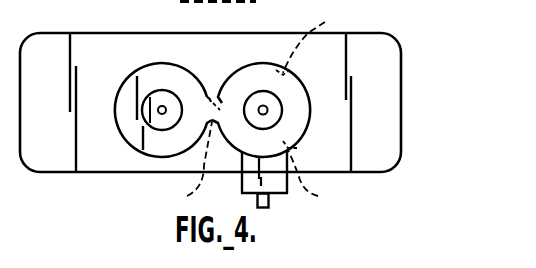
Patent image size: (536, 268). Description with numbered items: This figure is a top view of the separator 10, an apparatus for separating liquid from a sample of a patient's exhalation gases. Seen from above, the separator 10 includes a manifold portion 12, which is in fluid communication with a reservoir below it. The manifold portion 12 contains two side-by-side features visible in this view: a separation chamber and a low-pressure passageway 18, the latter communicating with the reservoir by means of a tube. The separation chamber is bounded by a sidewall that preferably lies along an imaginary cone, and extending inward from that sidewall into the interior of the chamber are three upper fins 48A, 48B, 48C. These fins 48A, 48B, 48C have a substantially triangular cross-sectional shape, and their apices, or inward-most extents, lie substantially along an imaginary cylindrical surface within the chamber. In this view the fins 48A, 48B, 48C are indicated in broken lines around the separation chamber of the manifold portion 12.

The separator 10 is at (403, 34).
The manifold portion 12 is at (253, 77).
The low-pressure passageway 18 is at (163, 108).
The upper fin 48A is at (315, 42).
The upper fin 48B is at (315, 176).
The upper fin 48C is at (188, 157).